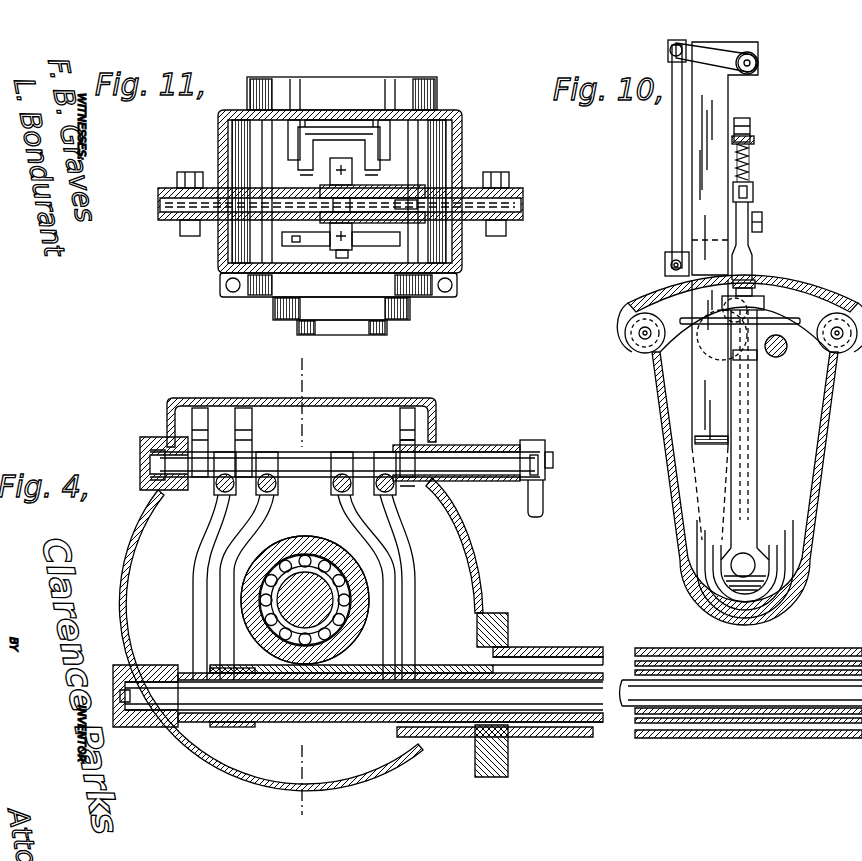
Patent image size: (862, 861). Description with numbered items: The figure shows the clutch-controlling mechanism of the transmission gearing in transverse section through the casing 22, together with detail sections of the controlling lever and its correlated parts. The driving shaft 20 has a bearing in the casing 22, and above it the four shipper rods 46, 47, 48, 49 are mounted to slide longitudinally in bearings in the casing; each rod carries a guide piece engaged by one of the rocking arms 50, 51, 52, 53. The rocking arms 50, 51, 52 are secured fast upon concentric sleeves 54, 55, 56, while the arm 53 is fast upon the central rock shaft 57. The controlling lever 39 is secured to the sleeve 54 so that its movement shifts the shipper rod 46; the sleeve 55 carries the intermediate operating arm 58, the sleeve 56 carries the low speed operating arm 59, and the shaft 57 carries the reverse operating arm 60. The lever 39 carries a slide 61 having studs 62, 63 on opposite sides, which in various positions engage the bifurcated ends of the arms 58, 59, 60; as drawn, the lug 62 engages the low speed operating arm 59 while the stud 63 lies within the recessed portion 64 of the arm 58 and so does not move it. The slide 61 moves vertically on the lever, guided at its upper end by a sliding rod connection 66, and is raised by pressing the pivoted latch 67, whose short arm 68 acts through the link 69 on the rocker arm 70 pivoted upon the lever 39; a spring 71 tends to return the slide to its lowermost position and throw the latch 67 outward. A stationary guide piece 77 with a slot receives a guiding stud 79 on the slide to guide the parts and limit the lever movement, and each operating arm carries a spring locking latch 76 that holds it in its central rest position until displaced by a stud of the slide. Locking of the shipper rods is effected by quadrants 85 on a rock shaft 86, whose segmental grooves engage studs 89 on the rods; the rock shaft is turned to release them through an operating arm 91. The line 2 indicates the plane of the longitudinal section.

In FIG. 4, the section line 2 is at (265, 372).
In FIG. 4, the driving shaft 20 is at (285, 600).
In FIG. 4, the casing 22 is at (120, 560).
In FIG. 11, the controlling lever 39 is at (407, 220).
In FIG. 10, the controlling lever 39 is at (722, 98).
In FIG. 4, the shipper rod 46 is at (352, 490).
In FIG. 4, the shipper rod 47 is at (398, 490).
In FIG. 4, the shipper rod 48 is at (278, 490).
In FIG. 4, the shipper rod 49 is at (215, 485).
In FIG. 4, the rocking arm 50 is at (400, 530).
In FIG. 4, the rocking arm 51 is at (410, 555).
In FIG. 4, the rocking arm 52 is at (263, 517).
In FIG. 4, the rocking arm 53 is at (215, 527).
In FIG. 4, the sleeve 54 is at (357, 673).
In FIG. 11, the sleeve 55 is at (453, 273).
In FIG. 4, the sleeve 55 is at (440, 660).
In FIG. 4, the sleeve 56 is at (240, 668).
In FIG. 10, the rock shaft 57 is at (755, 563).
In FIG. 4, the rock shaft 57 is at (185, 716).
In FIG. 11, the intermediate operating arm 58 is at (365, 278).
In FIG. 10, the intermediate operating arm 58 is at (770, 492).
In FIG. 11, the low speed operating arm 59 is at (313, 170).
In FIG. 10, the low speed operating arm 59 is at (758, 435).
In FIG. 11, the reverse operating arm 60 is at (360, 150).
In FIG. 10, the reverse operating arm 60 is at (750, 403).
In FIG. 10, the slide 61 is at (745, 247).
In FIG. 11, the stud 62 is at (367, 167).
In FIG. 11, the stud 63 is at (357, 238).
In FIG. 10, the stud 63 is at (748, 356).
In FIG. 10, the recessed portion 64 is at (781, 352).
In FIG. 10, the sliding rod connection 66 is at (752, 118).
In FIG. 10, the pivoted latch 67 is at (757, 50).
In FIG. 10, the short arm 68 is at (712, 58).
In FIG. 10, the link 69 is at (673, 158).
In FIG. 10, the rocker arm 70 is at (668, 264).
In FIG. 10, the spring 71 is at (755, 160).
In FIG. 11, the spring locking latch 76 is at (340, 257).
In FIG. 10, the spring locking latch 76 is at (760, 284).
In FIG. 11, the stationary guide piece 77 is at (415, 210).
In FIG. 10, the stationary guide piece 77 is at (790, 318).
In FIG. 11, the guiding stud 79 is at (317, 200).
In FIG. 4, the locking quadrant 85 is at (208, 425).
In FIG. 4, the rock shaft 86 is at (489, 457).
In FIG. 4, the stud 89 is at (262, 456).
In FIG. 4, the operating arm 91 is at (542, 488).